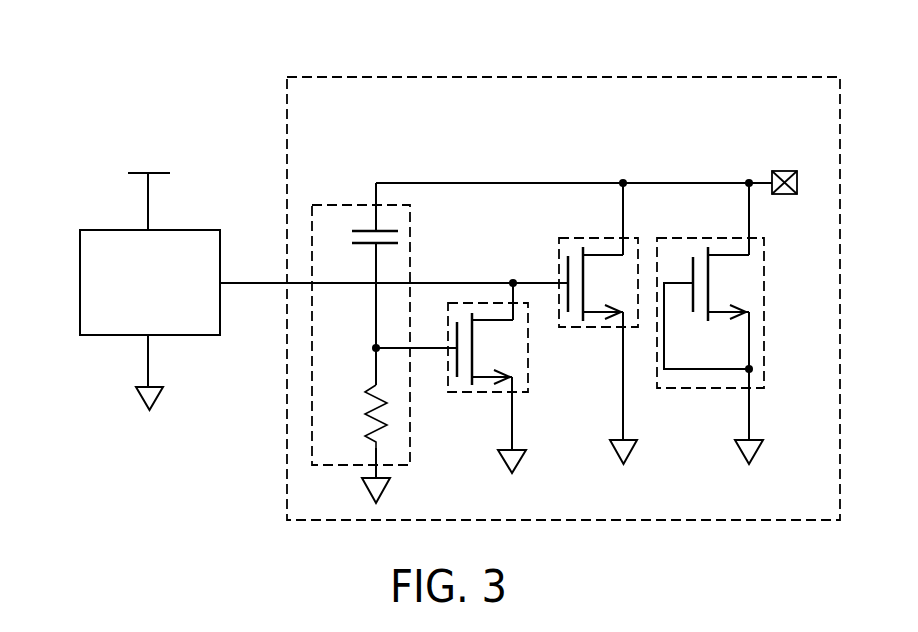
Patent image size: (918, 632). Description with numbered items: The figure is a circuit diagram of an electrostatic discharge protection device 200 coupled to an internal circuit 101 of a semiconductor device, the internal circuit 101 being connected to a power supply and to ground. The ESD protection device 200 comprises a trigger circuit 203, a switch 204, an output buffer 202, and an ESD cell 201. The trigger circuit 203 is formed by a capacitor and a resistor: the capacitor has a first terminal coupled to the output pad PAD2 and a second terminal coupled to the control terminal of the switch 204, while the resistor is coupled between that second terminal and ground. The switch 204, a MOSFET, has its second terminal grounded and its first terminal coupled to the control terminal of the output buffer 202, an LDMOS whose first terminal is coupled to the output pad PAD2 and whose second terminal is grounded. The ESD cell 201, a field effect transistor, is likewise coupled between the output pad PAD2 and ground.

The internal circuit 101 is at (80, 248).
The ESD protection device 200 is at (582, 77).
The ESD cell 201 is at (764, 357).
The output buffer 202 is at (598, 328).
The trigger circuit 203 is at (410, 238).
The switch 204 is at (528, 369).
The output pad PAD2 is at (786, 171).